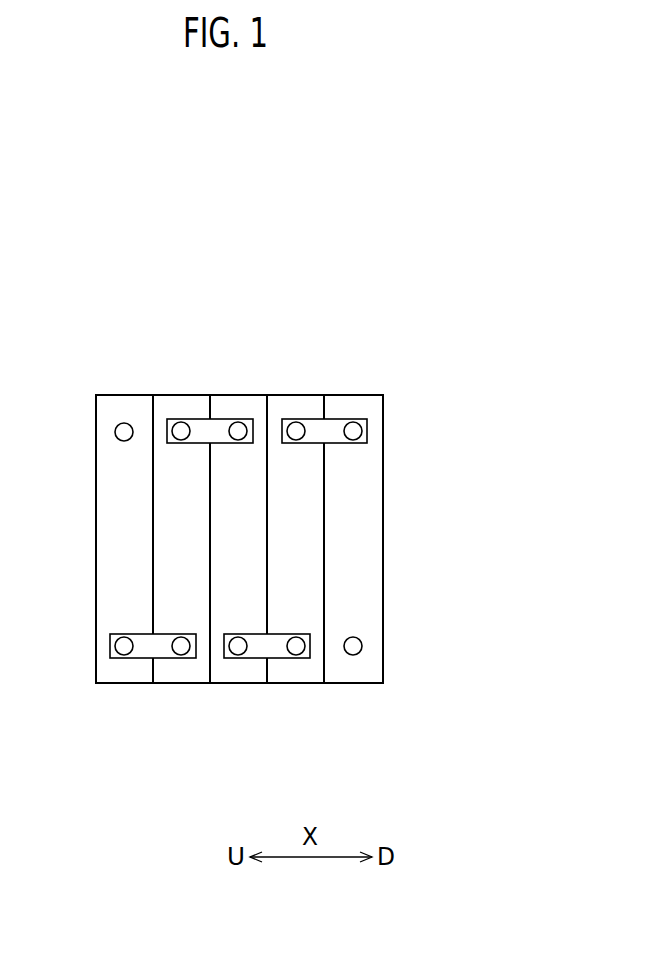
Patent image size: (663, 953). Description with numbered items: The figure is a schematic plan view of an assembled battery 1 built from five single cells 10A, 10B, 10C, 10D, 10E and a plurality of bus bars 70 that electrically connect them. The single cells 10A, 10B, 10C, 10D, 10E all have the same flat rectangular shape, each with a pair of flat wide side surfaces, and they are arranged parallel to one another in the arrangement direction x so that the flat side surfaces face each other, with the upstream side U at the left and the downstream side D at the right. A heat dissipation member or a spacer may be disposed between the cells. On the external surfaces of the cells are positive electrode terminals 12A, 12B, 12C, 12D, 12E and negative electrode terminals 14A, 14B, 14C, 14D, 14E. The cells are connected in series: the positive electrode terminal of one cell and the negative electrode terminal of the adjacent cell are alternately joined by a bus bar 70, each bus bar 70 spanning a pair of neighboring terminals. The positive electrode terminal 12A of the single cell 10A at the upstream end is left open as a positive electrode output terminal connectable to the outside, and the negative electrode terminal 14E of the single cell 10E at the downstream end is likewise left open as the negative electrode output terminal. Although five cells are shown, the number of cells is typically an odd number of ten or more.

The assembled battery 1 is at (282, 539).
The single cell 10A is at (113, 686).
The single cell 10B is at (189, 686).
The single cell 10C is at (245, 686).
The single cell 10D is at (295, 686).
The single cell 10E is at (353, 686).
The positive electrode terminal 12A is at (124, 423).
The positive electrode terminal 12B is at (181, 656).
The positive electrode terminal 12C is at (238, 423).
The positive electrode terminal 12D is at (296, 656).
The positive electrode terminal 12E is at (353, 423).
The negative electrode terminal 14A is at (124, 656).
The negative electrode terminal 14B is at (181, 423).
The negative electrode terminal 14C is at (238, 656).
The negative electrode terminal 14D is at (296, 423).
The negative electrode terminal 14E is at (353, 656).
The bus bar 70 is at (203, 428).